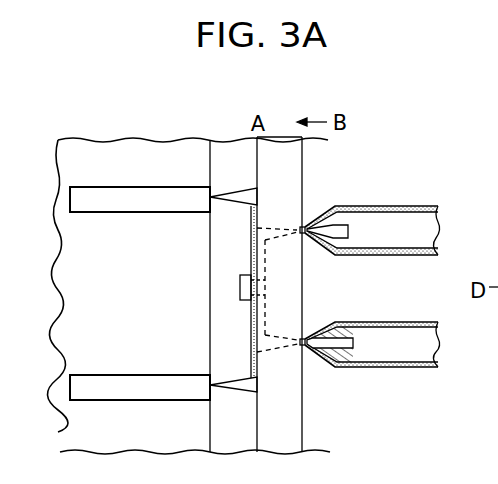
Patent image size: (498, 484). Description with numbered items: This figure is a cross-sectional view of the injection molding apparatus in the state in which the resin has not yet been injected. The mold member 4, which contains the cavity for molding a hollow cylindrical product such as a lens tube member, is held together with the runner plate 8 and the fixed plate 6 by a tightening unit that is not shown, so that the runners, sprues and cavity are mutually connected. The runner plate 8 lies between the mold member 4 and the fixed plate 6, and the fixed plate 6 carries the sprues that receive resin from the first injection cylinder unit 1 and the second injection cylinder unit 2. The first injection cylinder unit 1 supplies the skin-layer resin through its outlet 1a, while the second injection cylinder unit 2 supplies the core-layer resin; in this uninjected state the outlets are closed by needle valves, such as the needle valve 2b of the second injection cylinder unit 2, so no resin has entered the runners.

The mold member 4 is at (152, 152).
The runner plate 8 is at (229, 150).
The fixed plate 6 is at (297, 158).
The first injection cylinder unit 1 is at (405, 203).
The outlet 1a is at (340, 230).
The second injection cylinder unit 2 is at (395, 320).
The needle valve 2b is at (345, 345).